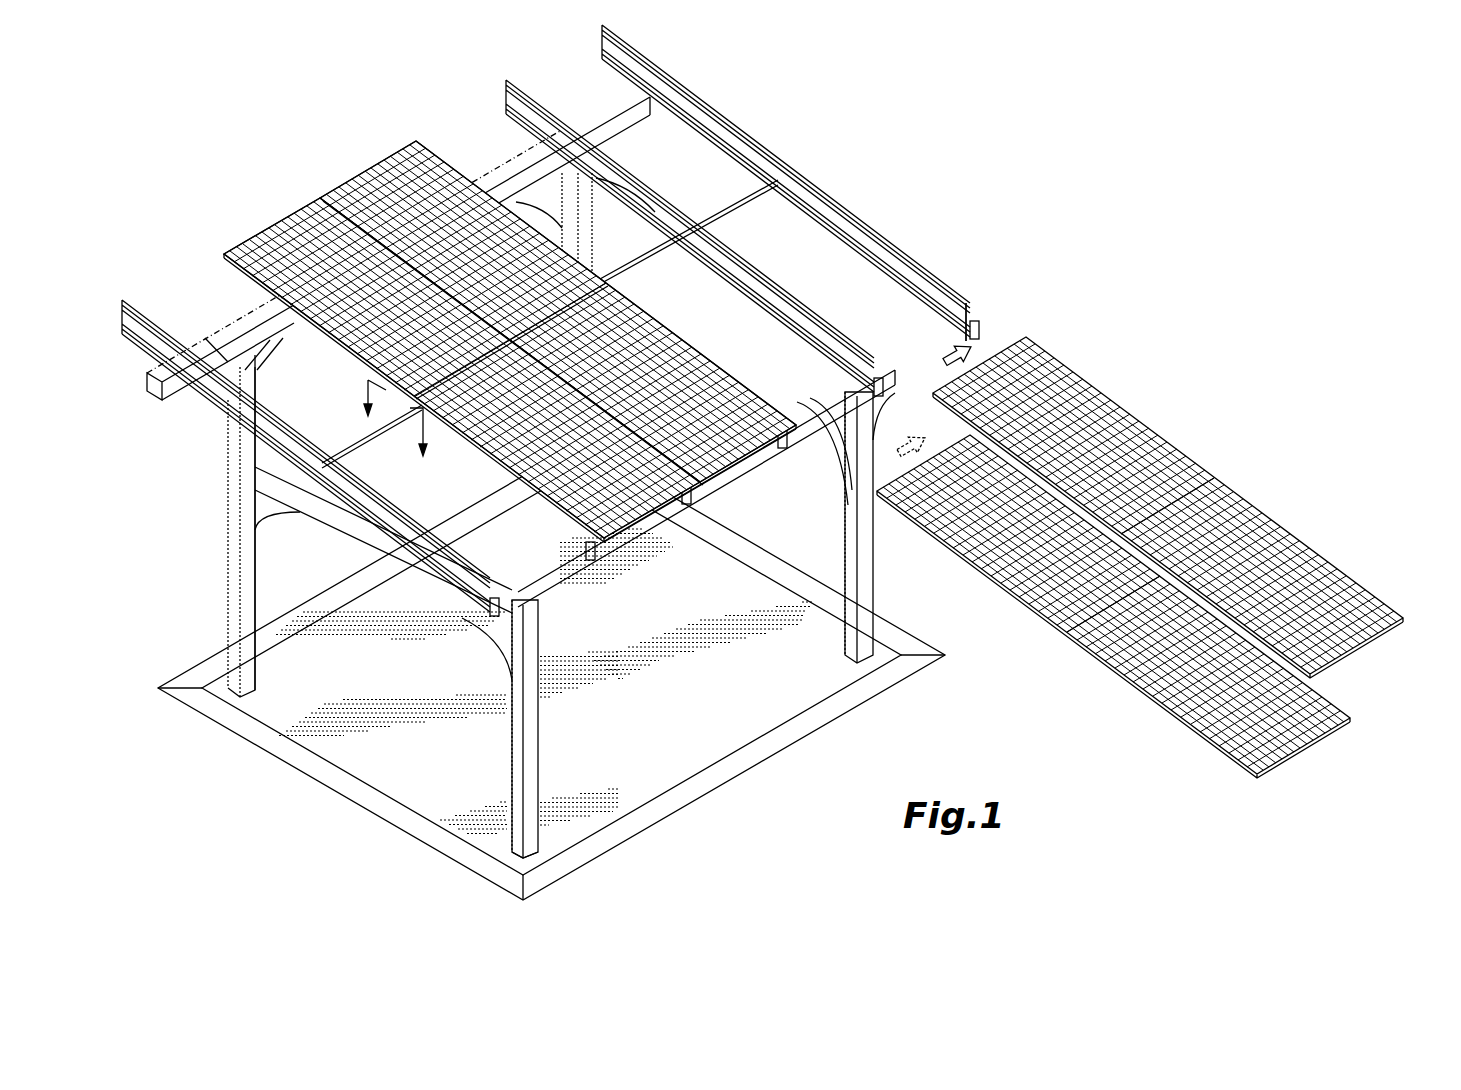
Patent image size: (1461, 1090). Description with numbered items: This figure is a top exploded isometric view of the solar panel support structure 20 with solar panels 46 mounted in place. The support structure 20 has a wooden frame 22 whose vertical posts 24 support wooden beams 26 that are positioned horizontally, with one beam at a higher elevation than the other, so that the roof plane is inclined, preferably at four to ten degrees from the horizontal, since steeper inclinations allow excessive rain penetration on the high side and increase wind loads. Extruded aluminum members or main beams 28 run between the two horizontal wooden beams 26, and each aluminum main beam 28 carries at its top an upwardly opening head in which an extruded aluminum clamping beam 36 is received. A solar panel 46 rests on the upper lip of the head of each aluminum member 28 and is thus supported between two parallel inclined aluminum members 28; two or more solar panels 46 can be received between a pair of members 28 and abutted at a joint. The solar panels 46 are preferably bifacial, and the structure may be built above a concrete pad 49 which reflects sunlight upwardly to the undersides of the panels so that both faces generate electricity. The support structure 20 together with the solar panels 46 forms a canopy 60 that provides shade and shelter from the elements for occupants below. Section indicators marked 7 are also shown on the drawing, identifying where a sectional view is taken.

The solar panel support structure 20 is at (903, 153).
The wooden frame 22 is at (532, 745).
The vertical posts 24 is at (584, 226).
The wooden beams 26 is at (230, 336).
The main beams 28 is at (768, 262).
The clamping beams 36 is at (975, 305).
The solar panels 46 is at (1082, 380).
The concrete pad 49 is at (698, 706).
The canopy 60 is at (335, 152).
The section line indicator 7 is at (390, 431).